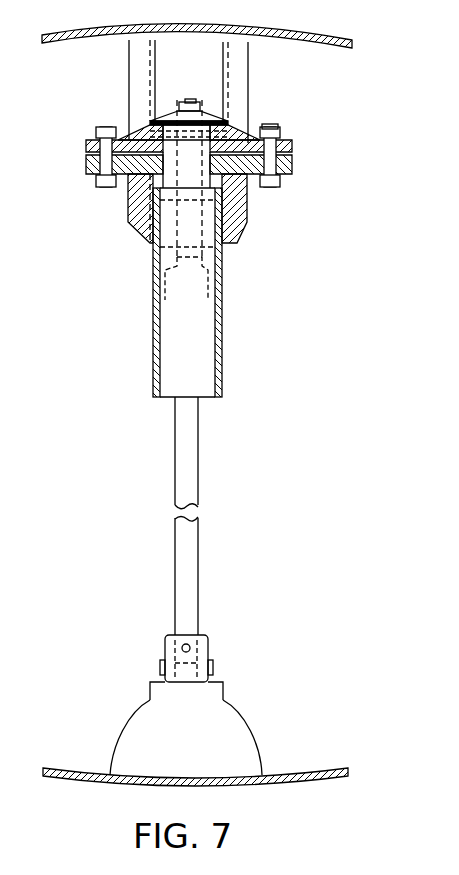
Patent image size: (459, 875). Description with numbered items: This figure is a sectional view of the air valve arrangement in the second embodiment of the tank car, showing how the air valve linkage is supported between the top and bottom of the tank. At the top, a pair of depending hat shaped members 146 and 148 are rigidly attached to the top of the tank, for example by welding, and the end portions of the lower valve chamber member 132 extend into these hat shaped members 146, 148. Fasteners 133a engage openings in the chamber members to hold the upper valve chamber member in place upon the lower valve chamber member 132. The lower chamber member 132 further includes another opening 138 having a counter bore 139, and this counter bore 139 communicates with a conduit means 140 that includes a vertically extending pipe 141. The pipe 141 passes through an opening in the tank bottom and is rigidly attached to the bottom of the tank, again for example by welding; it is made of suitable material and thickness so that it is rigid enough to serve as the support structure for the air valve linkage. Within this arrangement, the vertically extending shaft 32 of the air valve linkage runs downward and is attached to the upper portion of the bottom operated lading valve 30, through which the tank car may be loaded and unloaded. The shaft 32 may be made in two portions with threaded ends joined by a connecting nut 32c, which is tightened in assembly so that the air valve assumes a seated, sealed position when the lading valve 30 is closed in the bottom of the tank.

The lading valve 30 is at (220, 716).
The vertically extending shaft 32 is at (190, 466).
The connecting nut 32c is at (195, 285).
The lower valve chamber member 132 is at (270, 184).
The fasteners 133a is at (285, 133).
The opening 138 is at (158, 187).
The counter bore 139 is at (245, 168).
The conduit means 140 is at (148, 352).
The vertically extending pipe 141 is at (222, 346).
The hat shaped member 146 is at (137, 66).
The hat shaped member 148 is at (240, 68).